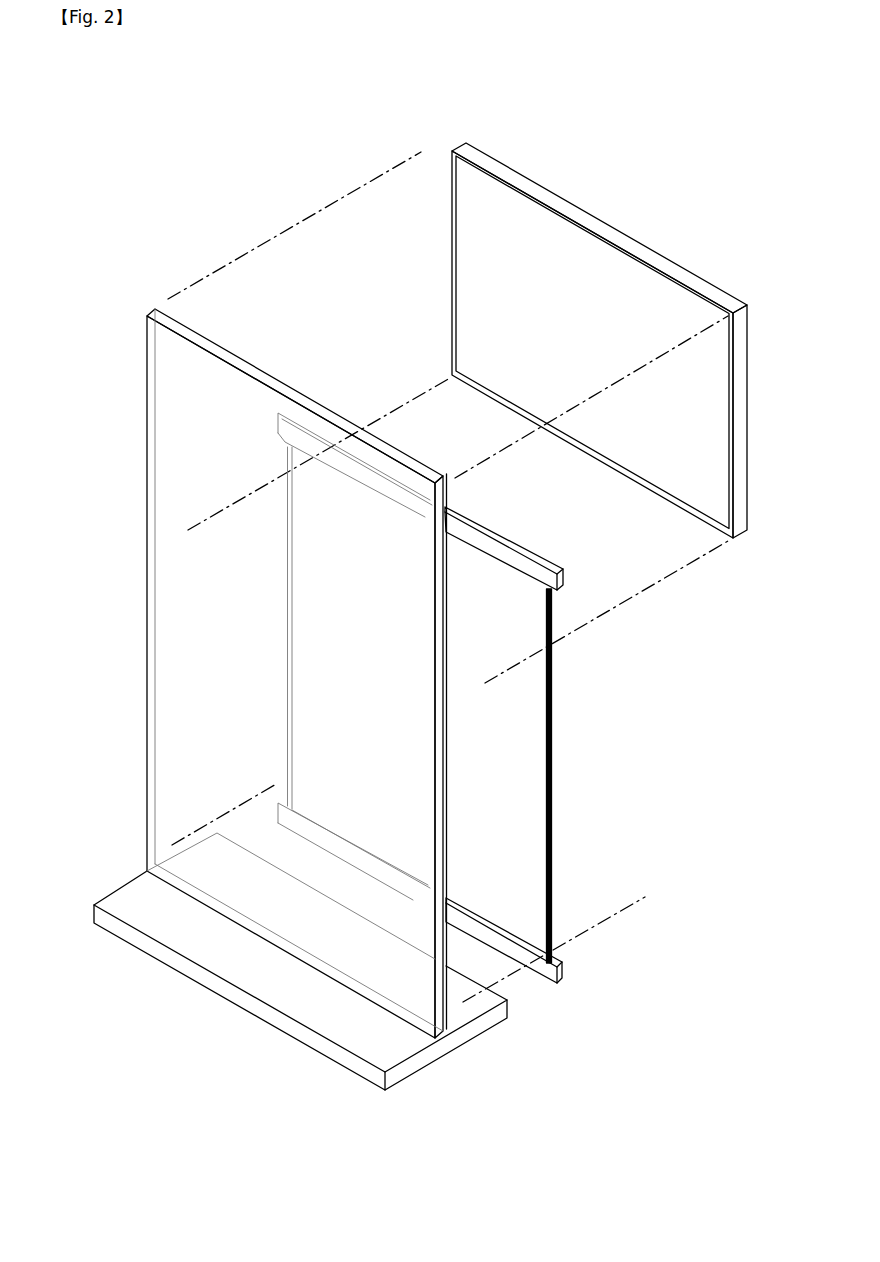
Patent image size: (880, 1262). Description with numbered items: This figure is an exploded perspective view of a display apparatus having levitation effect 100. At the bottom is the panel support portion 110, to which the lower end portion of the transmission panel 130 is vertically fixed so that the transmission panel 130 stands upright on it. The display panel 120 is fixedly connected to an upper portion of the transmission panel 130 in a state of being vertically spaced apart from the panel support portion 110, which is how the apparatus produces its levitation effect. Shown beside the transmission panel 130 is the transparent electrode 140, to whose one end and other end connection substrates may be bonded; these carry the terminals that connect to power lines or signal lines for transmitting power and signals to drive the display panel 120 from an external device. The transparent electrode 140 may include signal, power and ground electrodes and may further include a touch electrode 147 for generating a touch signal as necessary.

The display apparatus having levitation effect 100 is at (140, 165).
The panel support portion 110 is at (232, 958).
The display panel 120 is at (568, 257).
The transmission panel 130 is at (177, 659).
The transparent electrode 140 is at (537, 755).
The touch electrode 147 is at (551, 581).